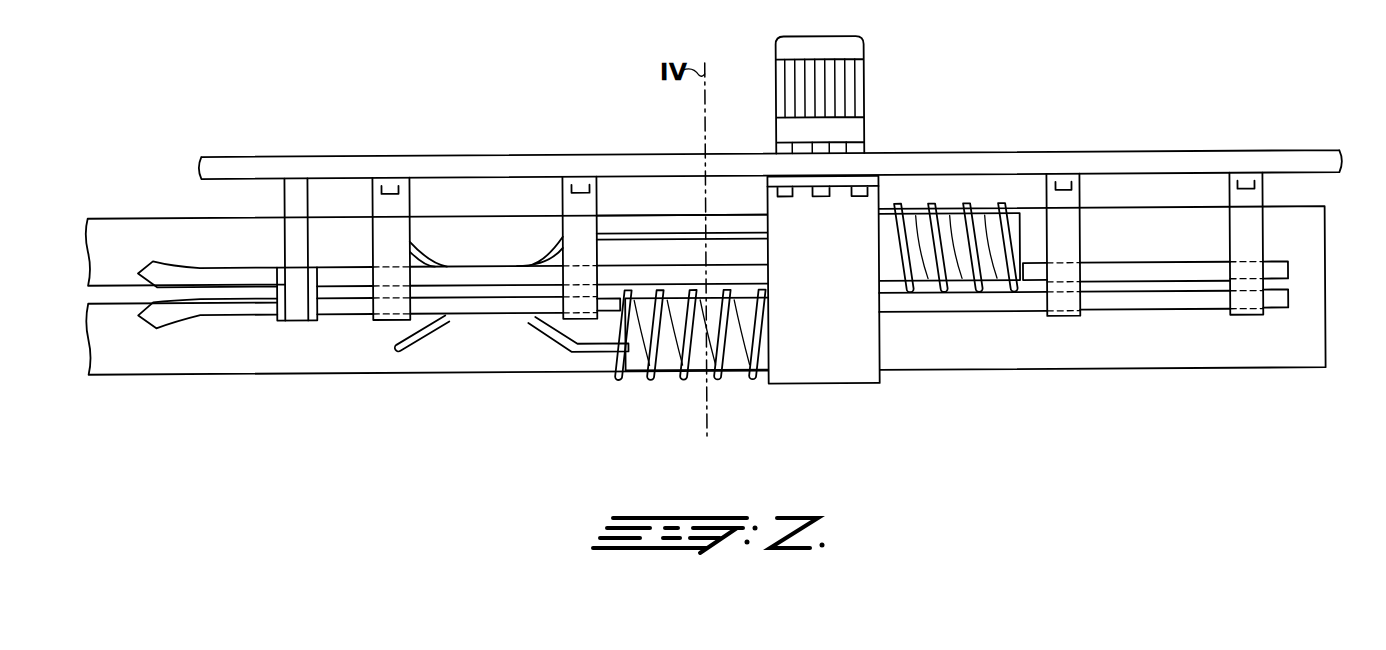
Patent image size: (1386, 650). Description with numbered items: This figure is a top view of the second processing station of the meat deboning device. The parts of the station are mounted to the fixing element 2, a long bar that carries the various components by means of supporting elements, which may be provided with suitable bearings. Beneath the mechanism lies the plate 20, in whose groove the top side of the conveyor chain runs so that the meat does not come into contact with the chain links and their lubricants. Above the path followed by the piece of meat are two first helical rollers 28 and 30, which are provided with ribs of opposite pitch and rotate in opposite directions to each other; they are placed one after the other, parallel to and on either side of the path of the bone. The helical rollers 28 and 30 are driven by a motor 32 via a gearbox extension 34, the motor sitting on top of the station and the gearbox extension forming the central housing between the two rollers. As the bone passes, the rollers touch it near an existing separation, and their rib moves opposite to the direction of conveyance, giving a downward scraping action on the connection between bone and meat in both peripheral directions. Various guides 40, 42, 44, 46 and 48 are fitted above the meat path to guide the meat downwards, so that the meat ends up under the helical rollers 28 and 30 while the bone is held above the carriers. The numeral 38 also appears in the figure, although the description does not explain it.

The fixing element 2 is at (542, 154).
The plate 20 is at (223, 371).
The first helical roller 28 is at (668, 350).
The first helical roller 30 is at (986, 234).
The motor 32 is at (858, 128).
The gearbox extension 34 is at (826, 369).
The guide rod 38 is at (492, 305).
The guide 40 is at (476, 266).
The guide 42 is at (413, 346).
The guide 44 is at (428, 248).
The guide 46 is at (1141, 306).
The guide 48 is at (1149, 266).